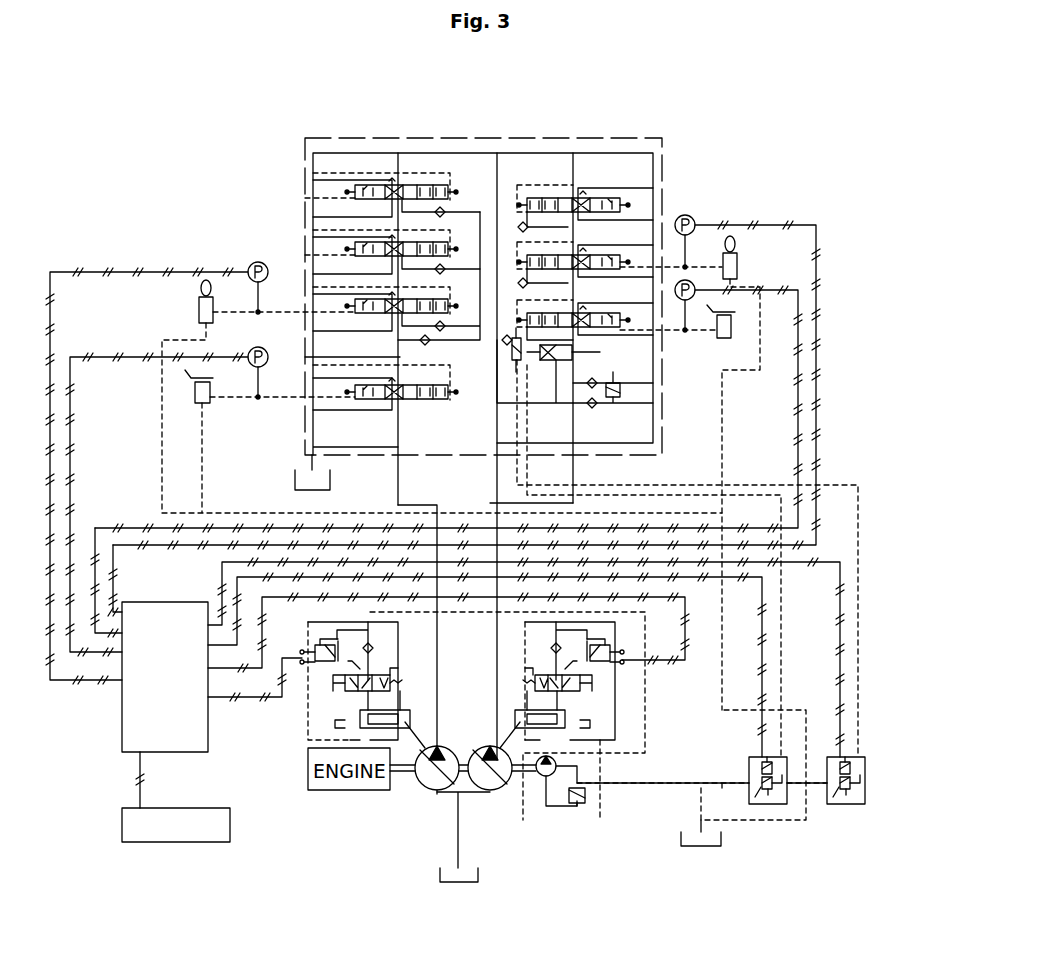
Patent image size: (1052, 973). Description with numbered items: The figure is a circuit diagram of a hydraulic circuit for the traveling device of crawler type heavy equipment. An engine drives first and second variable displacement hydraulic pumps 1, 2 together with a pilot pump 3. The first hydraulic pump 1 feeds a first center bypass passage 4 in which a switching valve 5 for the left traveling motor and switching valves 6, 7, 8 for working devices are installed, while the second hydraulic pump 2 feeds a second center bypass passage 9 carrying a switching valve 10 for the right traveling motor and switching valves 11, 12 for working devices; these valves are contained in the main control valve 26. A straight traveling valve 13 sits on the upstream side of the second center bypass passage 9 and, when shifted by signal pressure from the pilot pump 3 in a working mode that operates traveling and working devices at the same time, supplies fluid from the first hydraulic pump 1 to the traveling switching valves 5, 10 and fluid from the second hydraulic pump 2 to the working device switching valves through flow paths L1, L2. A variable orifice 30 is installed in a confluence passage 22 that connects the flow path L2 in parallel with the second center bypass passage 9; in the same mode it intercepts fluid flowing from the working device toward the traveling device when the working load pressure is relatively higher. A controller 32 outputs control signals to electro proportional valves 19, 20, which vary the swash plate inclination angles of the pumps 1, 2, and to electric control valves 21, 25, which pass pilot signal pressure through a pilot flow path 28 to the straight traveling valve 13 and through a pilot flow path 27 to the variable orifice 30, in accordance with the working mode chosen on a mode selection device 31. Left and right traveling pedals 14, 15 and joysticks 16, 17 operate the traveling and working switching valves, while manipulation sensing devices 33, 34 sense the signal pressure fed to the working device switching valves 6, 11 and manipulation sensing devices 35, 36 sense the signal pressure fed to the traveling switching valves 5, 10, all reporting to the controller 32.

The first variable displacement hydraulic pump 1 is at (430, 790).
The second variable displacement hydraulic pump 2 is at (500, 788).
The pilot pump 3 is at (556, 764).
The first center bypass passage 4 is at (400, 490).
The switching valve for left traveling motor 5 is at (380, 402).
The switching valve for working device 6 is at (355, 300).
The switching valve for working device 7 is at (355, 243).
The switching valve for working device 8 is at (355, 186).
The second center bypass passage 9 is at (590, 497).
The switching valve for right traveling motor 10 is at (640, 358).
The switching valve for working device 11 is at (640, 264).
The switching valve for working device 12 is at (610, 198).
The straight traveling valve 13 is at (580, 372).
The left traveling pedal 14 is at (195, 396).
The right traveling pedal 15 is at (731, 327).
The joystick 16 is at (199, 310).
The joystick 17 is at (738, 266).
The electro proportional valve 19 is at (298, 678).
The electro proportional valve 20 is at (630, 675).
The electric control valve 21 is at (850, 770).
The confluence passage 22 is at (565, 352).
The electric control valve 25 is at (770, 806).
The main control valve 26 is at (548, 135).
The pilot flow path 27 is at (783, 645).
The pilot flow path 28 is at (860, 614).
The variable orifice 30 is at (455, 360).
The mode selection device 31 is at (176, 842).
The controller 32 is at (122, 718).
The manipulation sensing device for working device 33 is at (250, 265).
The manipulation sensing device for working device 34 is at (693, 217).
The manipulation sensing device for traveling device 35 is at (266, 363).
The manipulation sensing device for traveling device 36 is at (693, 297).
The flow path L1 is at (645, 356).
The flow path L2 is at (488, 440).